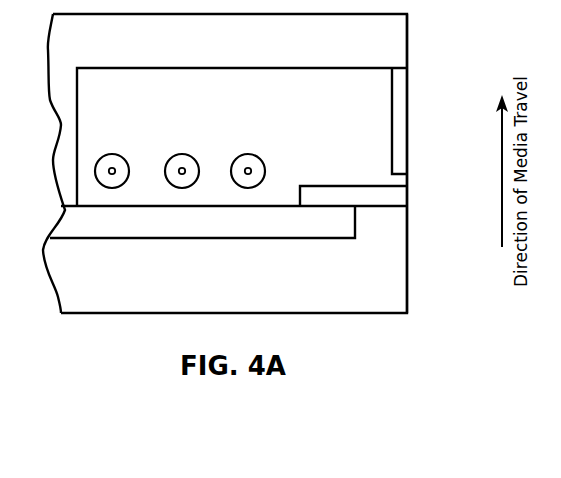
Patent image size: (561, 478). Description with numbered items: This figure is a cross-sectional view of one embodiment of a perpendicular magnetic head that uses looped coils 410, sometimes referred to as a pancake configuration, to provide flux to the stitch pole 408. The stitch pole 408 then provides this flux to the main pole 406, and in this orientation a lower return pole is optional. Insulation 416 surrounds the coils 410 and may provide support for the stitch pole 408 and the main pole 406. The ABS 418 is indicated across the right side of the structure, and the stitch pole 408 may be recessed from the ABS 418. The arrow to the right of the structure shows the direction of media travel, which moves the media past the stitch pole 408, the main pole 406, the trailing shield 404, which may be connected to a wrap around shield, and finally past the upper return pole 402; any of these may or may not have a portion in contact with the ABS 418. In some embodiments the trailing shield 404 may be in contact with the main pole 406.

The upper return pole 402 is at (282, 50).
The trailing shield 404 is at (407, 102).
The main pole 406 is at (407, 192).
The stitch pole 408 is at (227, 231).
The looped coils 410 is at (112, 154).
The insulation 416 is at (320, 143).
The ABS 418 is at (407, 31).